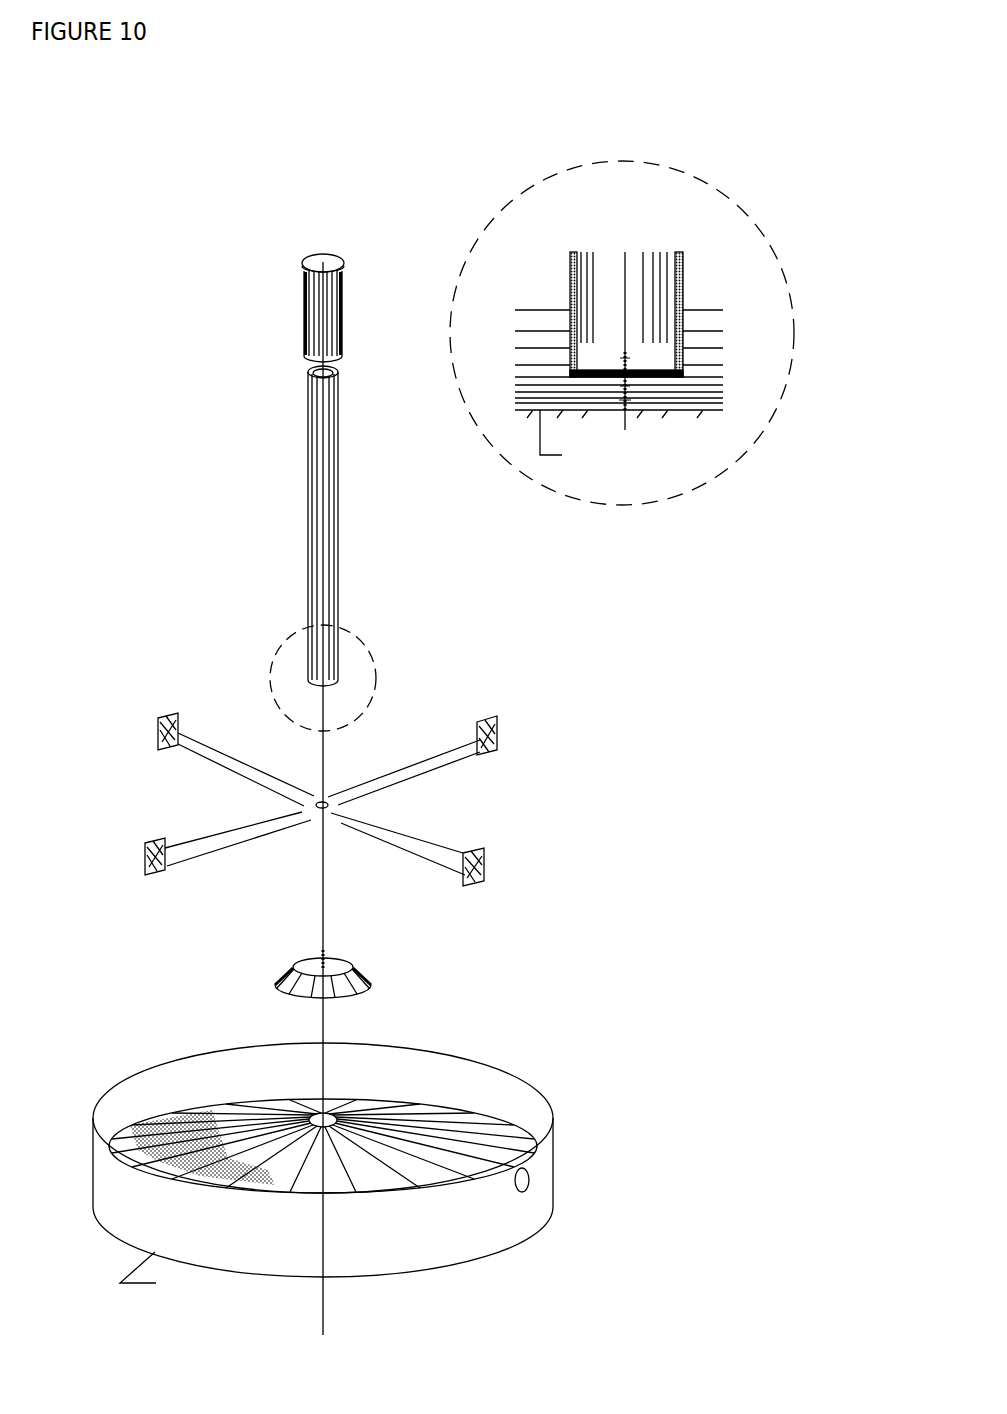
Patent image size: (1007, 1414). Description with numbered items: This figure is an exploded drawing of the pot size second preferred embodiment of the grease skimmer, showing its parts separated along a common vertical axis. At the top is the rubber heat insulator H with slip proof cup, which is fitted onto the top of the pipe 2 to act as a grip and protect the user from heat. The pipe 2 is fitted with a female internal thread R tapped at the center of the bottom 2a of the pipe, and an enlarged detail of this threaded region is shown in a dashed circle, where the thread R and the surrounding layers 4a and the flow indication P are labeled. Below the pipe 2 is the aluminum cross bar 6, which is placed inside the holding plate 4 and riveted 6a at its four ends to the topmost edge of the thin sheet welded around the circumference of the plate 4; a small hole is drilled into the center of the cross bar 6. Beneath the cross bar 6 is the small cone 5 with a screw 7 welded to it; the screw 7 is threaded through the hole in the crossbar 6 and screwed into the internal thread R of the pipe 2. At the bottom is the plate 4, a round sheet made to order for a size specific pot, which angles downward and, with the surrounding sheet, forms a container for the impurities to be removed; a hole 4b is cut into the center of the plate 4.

The rubber heat insulator H is at (297, 246).
The pipe 2 is at (303, 508).
The bottom of the pipe 2a is at (306, 668).
The plate 4 is at (359, 1152).
The surface layers 4a is at (614, 403).
The hole 4b is at (337, 1110).
The cone 5 is at (339, 970).
The cross bar 6 is at (357, 799).
The rivets 6a is at (493, 742).
The screw 7 is at (318, 963).
The female internal thread R is at (578, 275).
The pressure/flow P is at (693, 300).